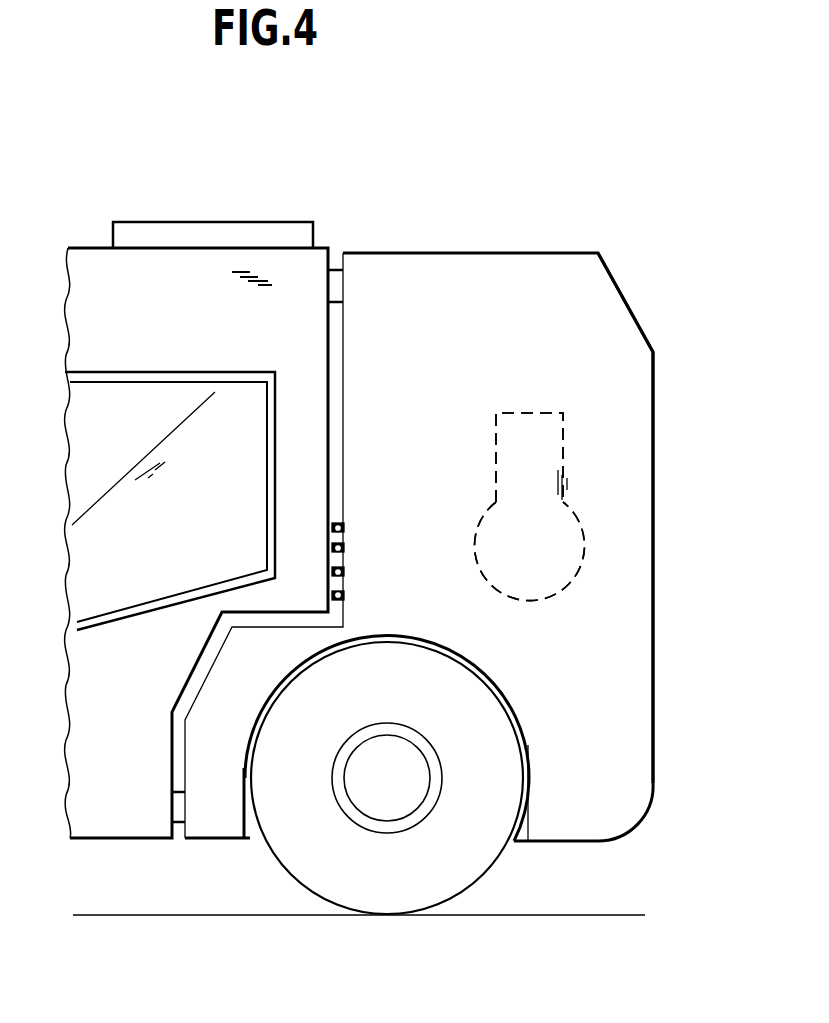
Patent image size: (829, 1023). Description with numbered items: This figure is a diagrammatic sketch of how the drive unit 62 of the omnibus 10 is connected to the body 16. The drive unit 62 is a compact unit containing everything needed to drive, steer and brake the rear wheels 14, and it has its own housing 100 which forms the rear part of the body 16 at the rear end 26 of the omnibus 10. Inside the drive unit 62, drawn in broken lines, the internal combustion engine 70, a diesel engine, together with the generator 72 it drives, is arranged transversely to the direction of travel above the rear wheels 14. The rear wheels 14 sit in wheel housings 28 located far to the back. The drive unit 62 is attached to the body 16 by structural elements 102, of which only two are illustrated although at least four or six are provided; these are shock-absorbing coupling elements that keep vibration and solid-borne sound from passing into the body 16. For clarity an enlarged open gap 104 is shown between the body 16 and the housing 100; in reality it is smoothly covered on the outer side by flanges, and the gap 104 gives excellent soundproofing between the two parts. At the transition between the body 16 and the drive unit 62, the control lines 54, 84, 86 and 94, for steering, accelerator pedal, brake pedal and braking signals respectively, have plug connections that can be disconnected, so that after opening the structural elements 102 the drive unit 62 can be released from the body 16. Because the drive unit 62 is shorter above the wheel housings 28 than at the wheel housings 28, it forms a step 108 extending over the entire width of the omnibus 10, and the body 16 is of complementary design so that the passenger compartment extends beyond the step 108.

The omnibus 10 is at (97, 215).
The rear wheels 14 is at (380, 893).
The body 16 is at (328, 248).
The rear end 26 is at (655, 575).
The wheel housings 28 is at (530, 795).
The control line 54 is at (344, 595).
The drive unit 62 is at (598, 250).
The internal combustion engine 70 is at (480, 415).
The generator 72 is at (529, 507).
The control line 84 is at (344, 571).
The control line 86 is at (344, 548).
The control lines 94 is at (344, 527).
The housing 100 is at (510, 275).
The structural elements 102 is at (340, 284).
The gap 104 is at (180, 770).
The step 108 is at (256, 636).